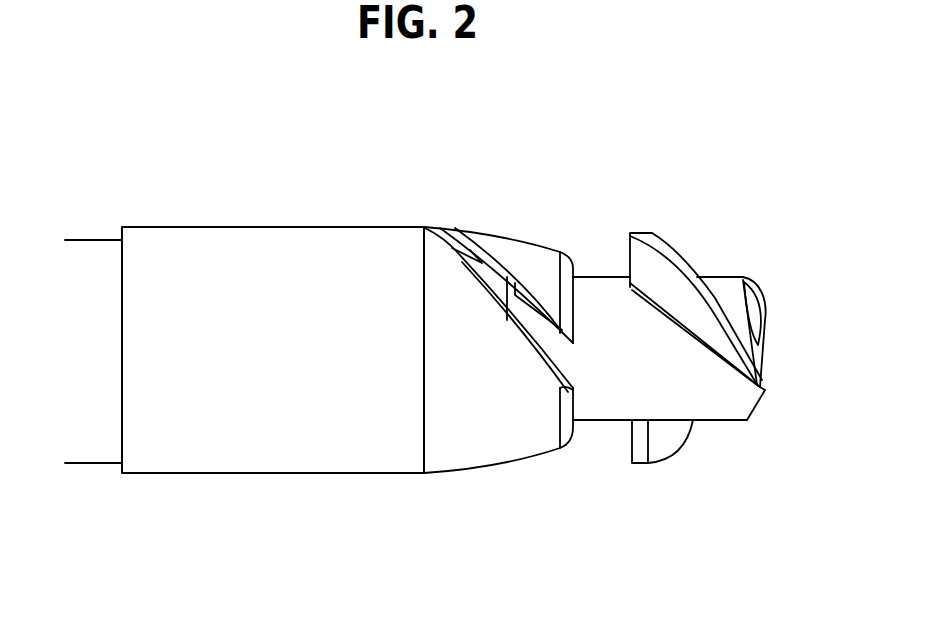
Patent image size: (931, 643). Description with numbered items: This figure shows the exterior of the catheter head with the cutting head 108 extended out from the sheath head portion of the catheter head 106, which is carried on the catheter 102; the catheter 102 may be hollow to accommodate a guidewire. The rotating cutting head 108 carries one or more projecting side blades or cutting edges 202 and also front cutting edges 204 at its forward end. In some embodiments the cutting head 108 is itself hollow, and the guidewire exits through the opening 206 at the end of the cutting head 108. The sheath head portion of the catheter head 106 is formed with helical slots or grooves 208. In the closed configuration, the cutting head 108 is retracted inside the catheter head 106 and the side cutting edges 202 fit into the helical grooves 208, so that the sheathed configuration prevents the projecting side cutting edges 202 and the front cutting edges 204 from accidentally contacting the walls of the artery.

The catheter 102 is at (85, 228).
The catheter head 106 is at (313, 203).
The helical slots or grooves 208 is at (452, 240).
The cutting edges 202 is at (683, 245).
The front cutting edges 204 is at (752, 275).
The opening 206 is at (765, 352).
The cutting head 108 is at (655, 500).